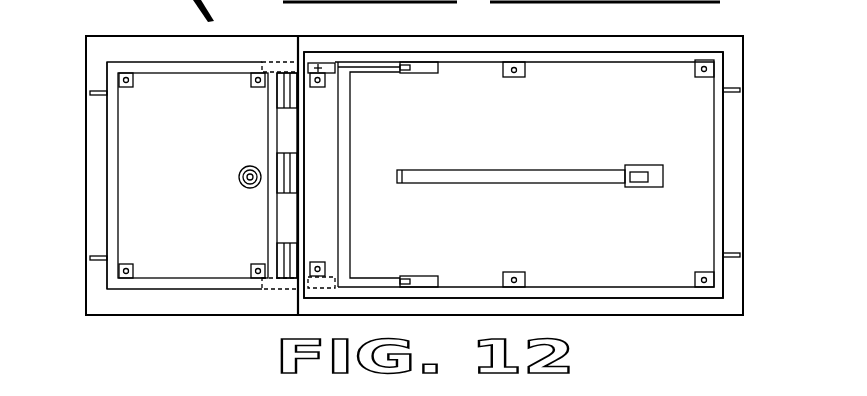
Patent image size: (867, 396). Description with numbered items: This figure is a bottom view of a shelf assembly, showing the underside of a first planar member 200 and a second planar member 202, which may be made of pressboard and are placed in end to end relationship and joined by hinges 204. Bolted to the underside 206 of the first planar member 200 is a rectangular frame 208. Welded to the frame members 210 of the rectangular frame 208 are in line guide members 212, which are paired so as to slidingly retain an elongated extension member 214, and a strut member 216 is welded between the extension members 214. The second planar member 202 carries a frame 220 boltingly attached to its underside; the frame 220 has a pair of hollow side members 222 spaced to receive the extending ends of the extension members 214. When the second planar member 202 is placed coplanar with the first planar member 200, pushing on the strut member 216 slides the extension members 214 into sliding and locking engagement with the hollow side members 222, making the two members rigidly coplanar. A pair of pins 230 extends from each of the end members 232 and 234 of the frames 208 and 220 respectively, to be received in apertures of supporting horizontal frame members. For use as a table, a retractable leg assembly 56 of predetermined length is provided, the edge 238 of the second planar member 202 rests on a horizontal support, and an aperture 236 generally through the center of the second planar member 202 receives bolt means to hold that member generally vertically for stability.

The retractable leg assembly 56 is at (512, 166).
The first planar member 200 is at (742, 208).
The second planar member 202 is at (92, 181).
The hinges 204 is at (287, 87).
The underside 206 is at (570, 218).
The rectangular frame 208 is at (704, 126).
The frame members 210 is at (557, 58).
The in line guide members 212 is at (318, 62).
The elongated extension member 214 is at (358, 70).
The strut member 216 is at (345, 232).
The frame 220 is at (102, 119).
The hollow side members 222 is at (180, 62).
The pins 230 is at (98, 91).
The end member 232 is at (720, 165).
The end member 234 is at (118, 170).
The aperture 236 is at (240, 188).
The edge 238 is at (88, 150).